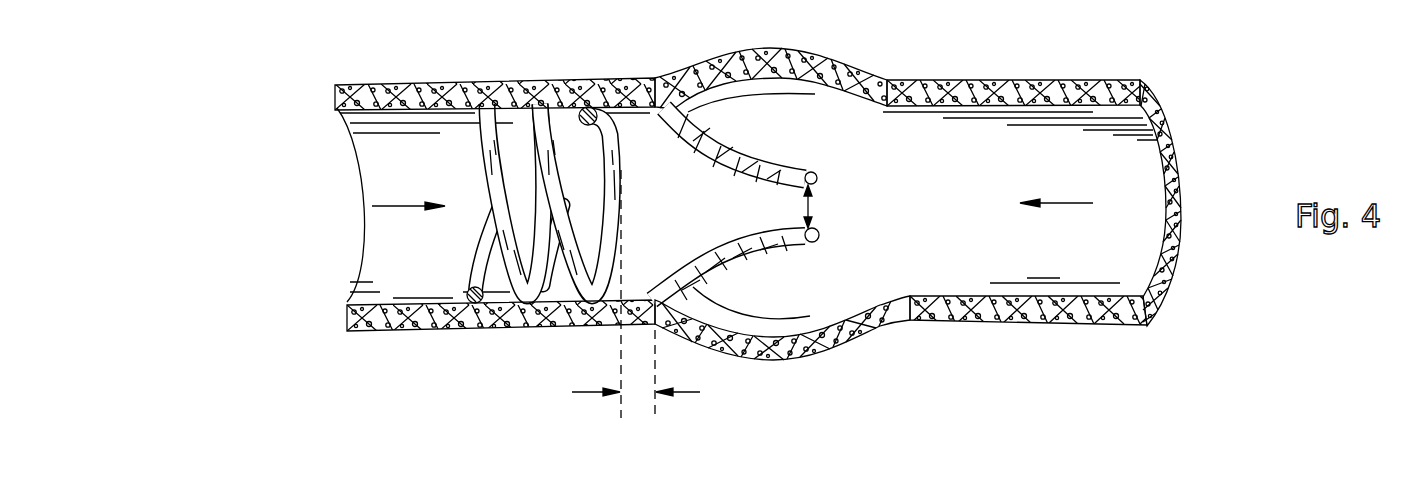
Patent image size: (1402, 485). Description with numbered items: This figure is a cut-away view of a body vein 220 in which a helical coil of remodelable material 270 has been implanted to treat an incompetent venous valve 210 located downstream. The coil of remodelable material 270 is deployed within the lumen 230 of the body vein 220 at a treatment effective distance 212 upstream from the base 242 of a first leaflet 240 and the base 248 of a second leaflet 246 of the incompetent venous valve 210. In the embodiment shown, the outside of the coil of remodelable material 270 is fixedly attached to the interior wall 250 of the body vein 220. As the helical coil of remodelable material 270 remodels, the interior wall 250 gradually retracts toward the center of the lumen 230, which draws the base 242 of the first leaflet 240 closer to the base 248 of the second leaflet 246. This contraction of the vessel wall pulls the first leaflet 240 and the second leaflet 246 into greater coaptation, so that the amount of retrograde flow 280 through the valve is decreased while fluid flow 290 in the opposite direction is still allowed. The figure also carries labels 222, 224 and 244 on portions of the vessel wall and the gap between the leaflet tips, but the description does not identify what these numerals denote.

The incompetent venous valve 210 is at (433, 357).
The treatment effective distance 212 is at (583, 390).
The body vein 220 is at (390, 85).
The lower tube wall 222 is at (378, 331).
The distal tube wall 224 is at (1085, 325).
The lumen 230 is at (1133, 157).
The first leaflet 240 is at (700, 134).
The base of the first leaflet 242 is at (653, 82).
The valve opening gap 244 is at (810, 205).
The second leaflet 246 is at (730, 250).
The base of the second leaflet 248 is at (690, 342).
The interior wall 250 is at (453, 85).
The helical coil of remodelable material 270 is at (490, 130).
The retrograde flow 280 is at (1093, 203).
The fluid flow 290 is at (384, 205).